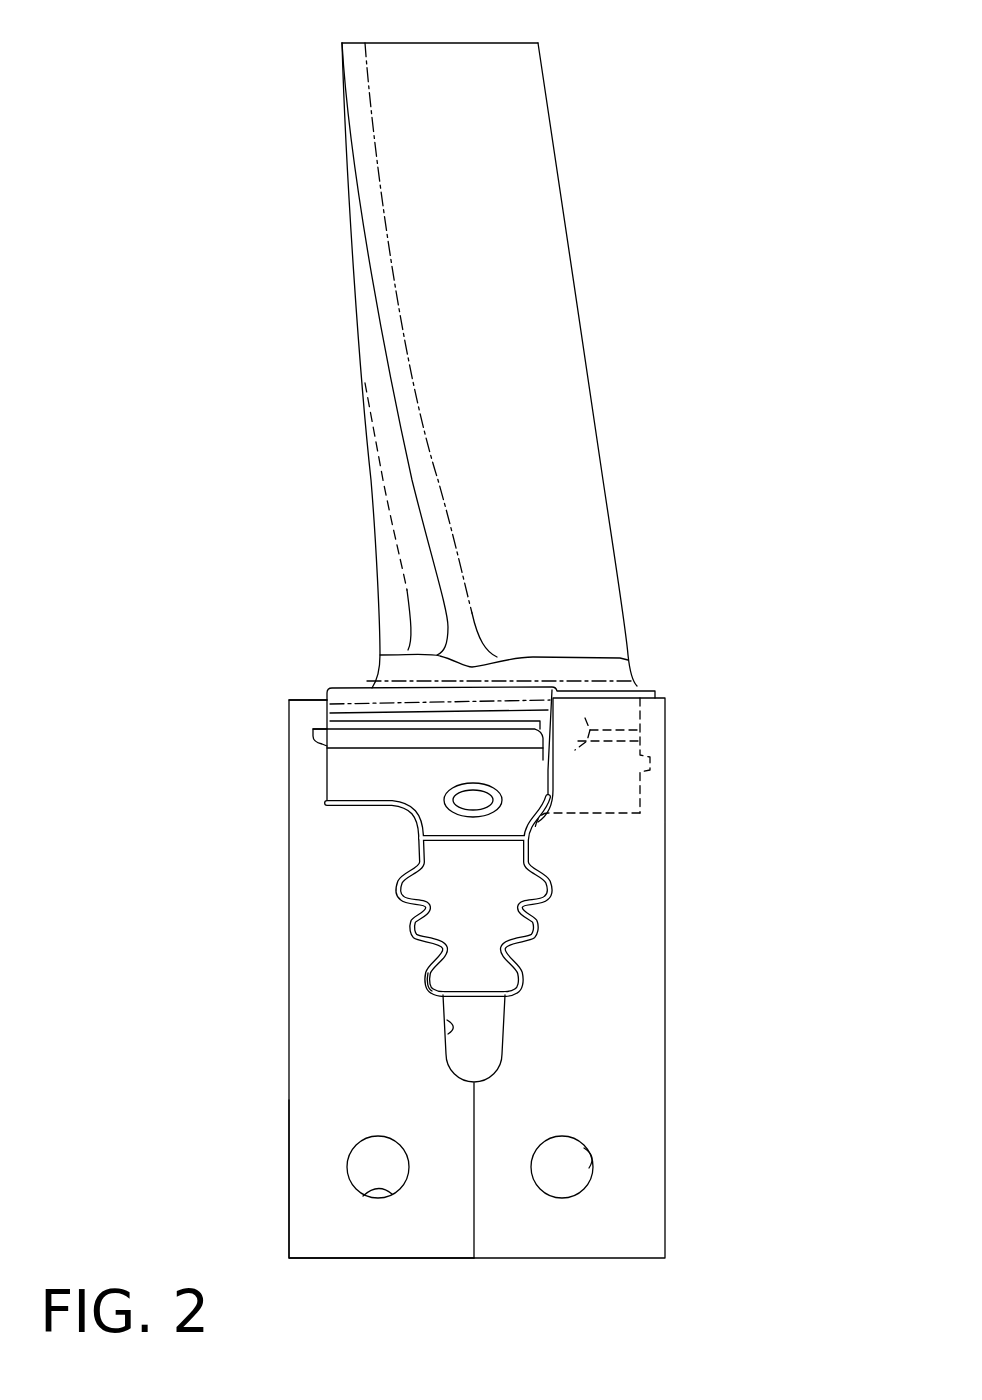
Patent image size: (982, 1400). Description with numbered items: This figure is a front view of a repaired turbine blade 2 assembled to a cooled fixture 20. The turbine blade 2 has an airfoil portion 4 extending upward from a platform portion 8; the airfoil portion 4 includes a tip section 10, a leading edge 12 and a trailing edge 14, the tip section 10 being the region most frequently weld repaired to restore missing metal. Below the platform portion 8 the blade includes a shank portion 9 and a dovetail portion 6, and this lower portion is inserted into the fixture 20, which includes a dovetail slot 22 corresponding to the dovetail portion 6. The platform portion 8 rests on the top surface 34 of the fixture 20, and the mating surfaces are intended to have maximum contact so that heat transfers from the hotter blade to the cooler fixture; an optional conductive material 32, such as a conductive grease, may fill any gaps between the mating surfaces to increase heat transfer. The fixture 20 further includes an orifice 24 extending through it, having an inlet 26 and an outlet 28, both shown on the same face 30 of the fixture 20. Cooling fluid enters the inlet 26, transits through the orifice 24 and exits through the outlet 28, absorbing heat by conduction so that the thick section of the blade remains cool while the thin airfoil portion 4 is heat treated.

The turbine blade 2 is at (485, 541).
The airfoil portion 4 is at (484, 344).
The dovetail portion 6 is at (510, 877).
The platform portion 8 is at (352, 687).
The shank portion 9 is at (610, 788).
The tip section 10 is at (519, 44).
The leading edge 12 is at (379, 330).
The trailing edge 14 is at (582, 335).
The fixture 20 is at (712, 1001).
The dovetail slot 22 is at (448, 1033).
The orifice 24 is at (362, 1152).
The inlet 26 is at (592, 1170).
The outlet 28 is at (368, 1194).
The face 30 is at (308, 1178).
The conductive material 32 is at (432, 978).
The top surface 34 is at (298, 699).